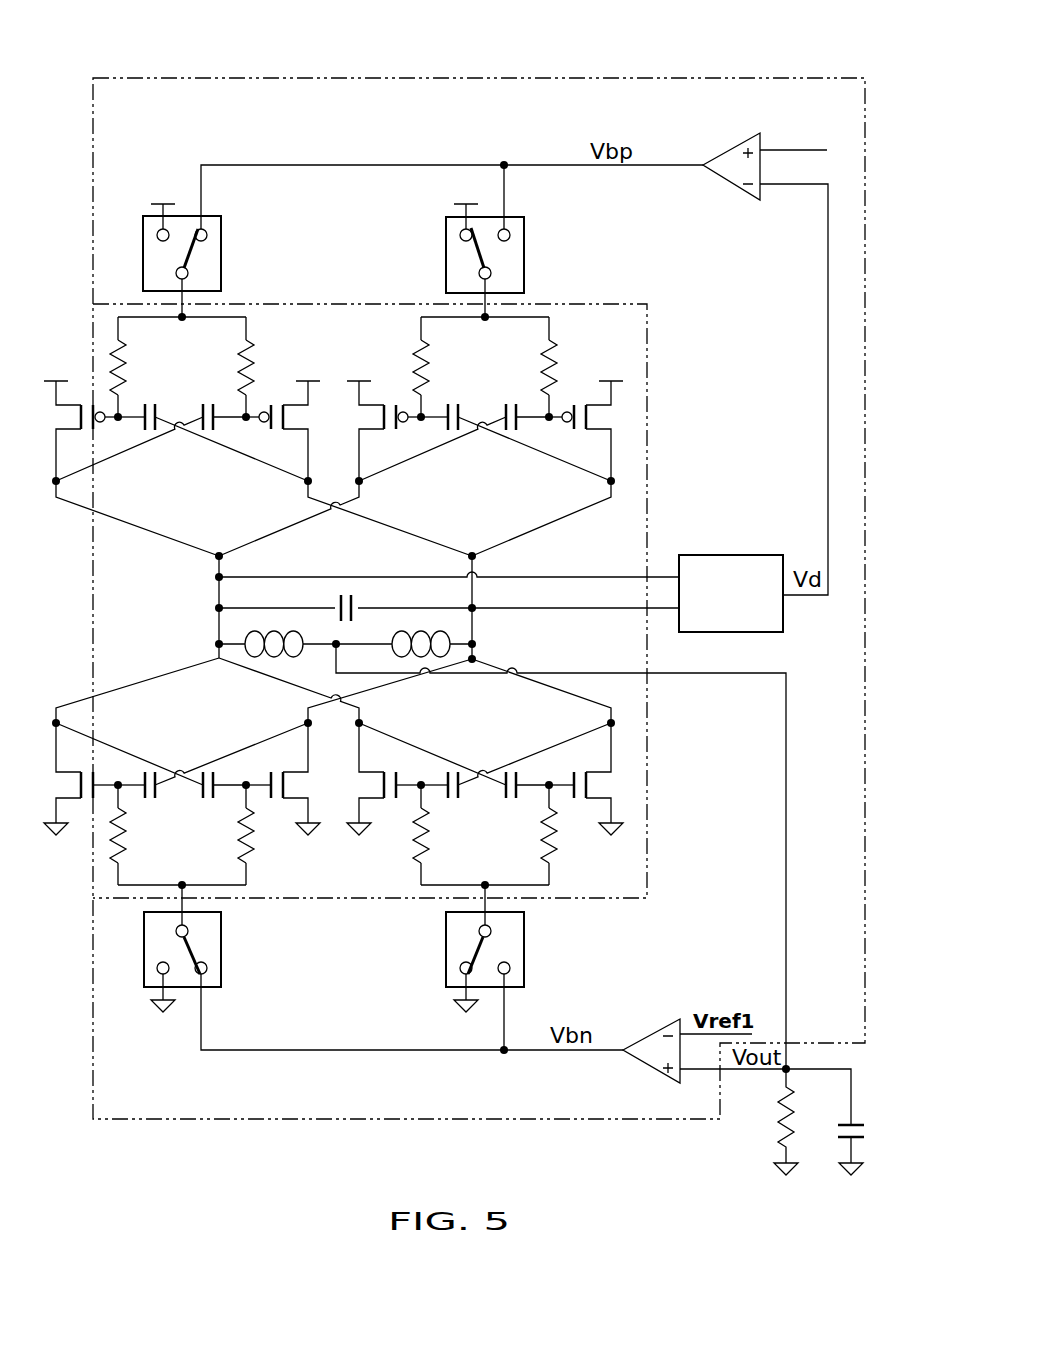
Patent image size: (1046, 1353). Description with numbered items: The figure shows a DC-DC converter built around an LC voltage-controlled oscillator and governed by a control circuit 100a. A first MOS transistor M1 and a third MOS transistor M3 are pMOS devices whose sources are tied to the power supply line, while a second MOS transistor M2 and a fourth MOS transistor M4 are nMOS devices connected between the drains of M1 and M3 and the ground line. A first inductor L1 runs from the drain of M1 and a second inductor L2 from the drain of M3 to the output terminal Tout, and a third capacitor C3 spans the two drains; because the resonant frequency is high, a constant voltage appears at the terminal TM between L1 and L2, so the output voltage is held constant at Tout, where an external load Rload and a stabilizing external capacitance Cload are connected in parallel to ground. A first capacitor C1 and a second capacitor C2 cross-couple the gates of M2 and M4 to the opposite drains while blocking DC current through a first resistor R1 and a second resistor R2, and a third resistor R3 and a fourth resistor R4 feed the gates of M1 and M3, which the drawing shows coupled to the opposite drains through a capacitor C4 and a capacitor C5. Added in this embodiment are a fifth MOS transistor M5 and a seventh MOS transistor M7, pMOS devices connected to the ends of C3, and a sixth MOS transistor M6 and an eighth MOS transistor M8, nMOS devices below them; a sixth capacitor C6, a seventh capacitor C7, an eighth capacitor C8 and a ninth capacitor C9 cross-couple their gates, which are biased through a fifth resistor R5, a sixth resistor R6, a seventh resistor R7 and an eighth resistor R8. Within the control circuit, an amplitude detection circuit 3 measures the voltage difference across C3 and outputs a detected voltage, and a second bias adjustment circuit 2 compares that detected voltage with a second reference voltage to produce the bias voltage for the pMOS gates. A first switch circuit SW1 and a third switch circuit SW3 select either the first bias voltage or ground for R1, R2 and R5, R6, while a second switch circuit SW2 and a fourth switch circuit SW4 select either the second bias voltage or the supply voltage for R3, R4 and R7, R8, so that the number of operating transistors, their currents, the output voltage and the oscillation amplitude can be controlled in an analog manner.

The control circuit 100a is at (724, 78).
The second bias adjustment circuit 2 is at (735, 147).
The amplitude detection circuit 3 is at (732, 555).
The first switch circuit SW1 is at (221, 948).
The second switch circuit SW2 is at (221, 253).
The third switch circuit SW3 is at (524, 948).
The fourth switch circuit SW4 is at (524, 253).
The first MOS transistor M1 is at (68, 406).
The second MOS transistor M2 is at (83, 764).
The third MOS transistor M3 is at (297, 406).
The fourth MOS transistor M4 is at (294, 773).
The fifth MOS transistor M5 is at (371, 406).
The sixth MOS transistor M6 is at (386, 764).
The seventh MOS transistor M7 is at (600, 406).
The eighth MOS transistor M8 is at (597, 773).
The first capacitor C1 is at (143, 769).
The second capacitor C2 is at (203, 769).
The third capacitor C3 is at (338, 600).
The capacitor C4 is at (153, 404).
The capacitor C5 is at (207, 404).
The sixth capacitor C6 is at (446, 769).
The seventh capacitor C7 is at (506, 769).
The eighth capacitor C8 is at (456, 404).
The ninth capacitor C9 is at (510, 404).
The first resistor R1 is at (125, 816).
The second resistor R2 is at (241, 843).
The third resistor R3 is at (112, 357).
The fourth resistor R4 is at (250, 358).
The fifth resistor R5 is at (428, 816).
The sixth resistor R6 is at (544, 843).
The seventh resistor R7 is at (415, 357).
The eighth resistor R8 is at (553, 358).
The first inductor L1 is at (240, 636).
The second inductor L2 is at (457, 636).
The terminal TM is at (338, 642).
The external load Rload is at (780, 1122).
The external capacitance Cload is at (846, 1147).
The output terminal Tout is at (788, 1066).